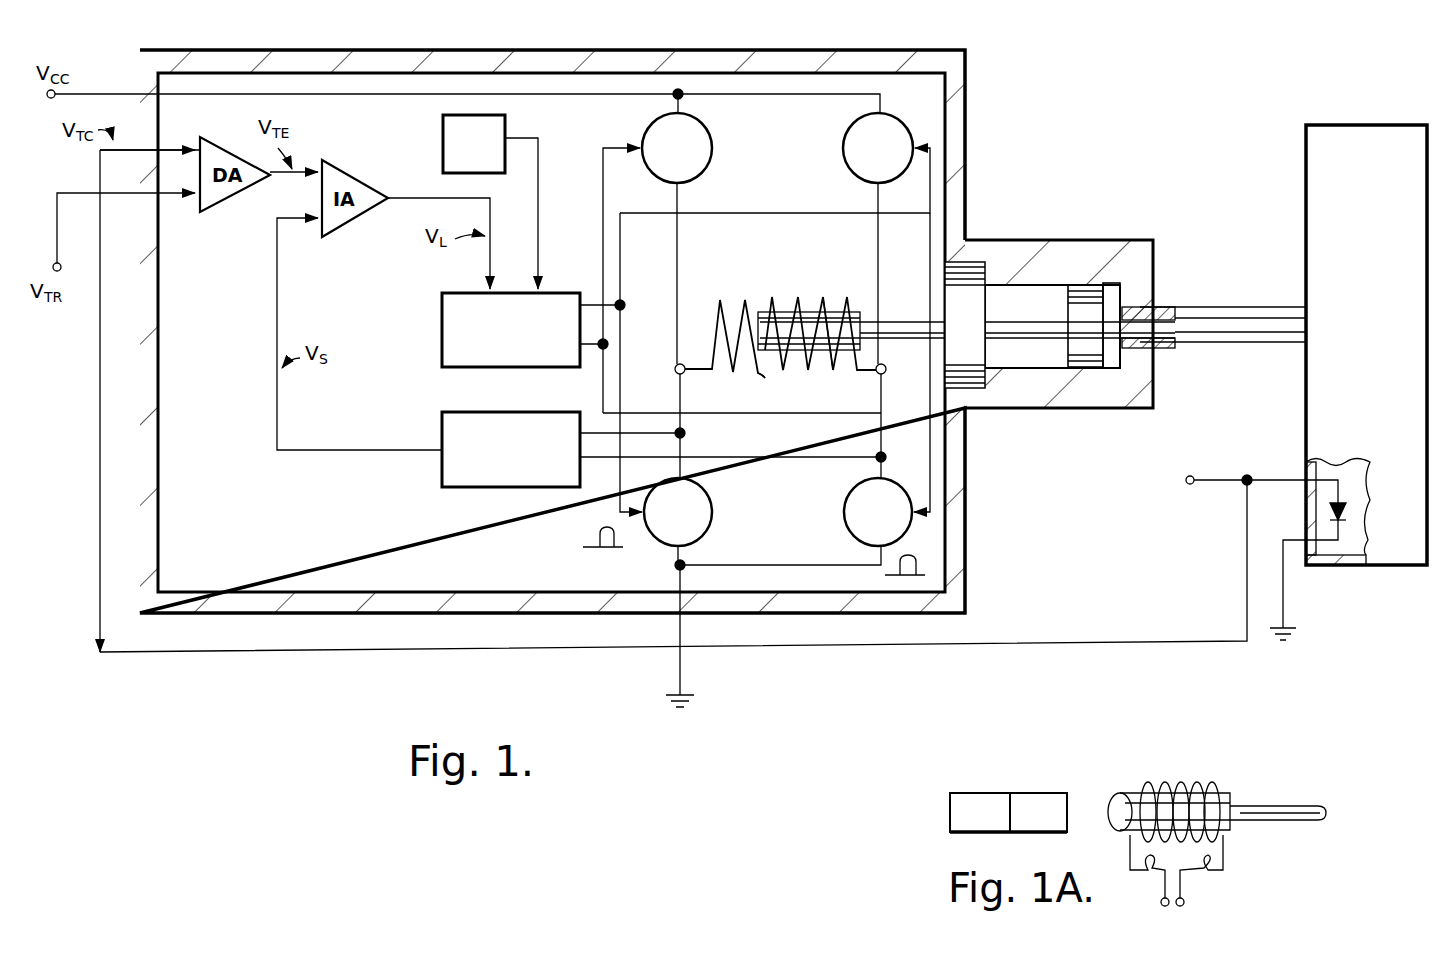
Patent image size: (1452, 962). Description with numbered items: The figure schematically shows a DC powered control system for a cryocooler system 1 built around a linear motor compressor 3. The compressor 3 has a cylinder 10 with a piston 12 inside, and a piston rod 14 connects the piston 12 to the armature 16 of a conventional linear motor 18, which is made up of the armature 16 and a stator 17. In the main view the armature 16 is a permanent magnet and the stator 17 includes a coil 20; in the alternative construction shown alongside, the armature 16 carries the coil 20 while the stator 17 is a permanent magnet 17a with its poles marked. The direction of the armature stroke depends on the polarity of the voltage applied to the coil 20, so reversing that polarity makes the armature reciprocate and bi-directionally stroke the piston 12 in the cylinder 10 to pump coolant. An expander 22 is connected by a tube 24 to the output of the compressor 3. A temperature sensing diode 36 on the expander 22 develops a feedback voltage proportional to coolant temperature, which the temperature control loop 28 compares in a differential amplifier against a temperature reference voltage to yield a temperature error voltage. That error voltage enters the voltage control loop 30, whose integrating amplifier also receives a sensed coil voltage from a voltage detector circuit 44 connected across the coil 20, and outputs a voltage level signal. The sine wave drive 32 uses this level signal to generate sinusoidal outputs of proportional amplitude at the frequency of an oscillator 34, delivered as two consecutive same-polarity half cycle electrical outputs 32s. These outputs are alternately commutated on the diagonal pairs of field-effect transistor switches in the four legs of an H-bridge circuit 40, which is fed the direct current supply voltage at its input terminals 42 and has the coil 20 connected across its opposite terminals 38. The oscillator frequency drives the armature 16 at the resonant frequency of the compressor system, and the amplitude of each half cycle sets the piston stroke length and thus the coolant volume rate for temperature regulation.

In FIG. 1, the cryocooler system 1 is at (1190, 428).
In FIG. 1, the linear motor compressor 3 is at (967, 77).
In FIG. 1, the cylinder 10 is at (1018, 290).
In FIG. 1, the piston 12 is at (1092, 300).
In FIG. 1, the piston rod 14 is at (903, 322).
In FIG. 1A, the piston rod 14 is at (1286, 805).
In FIG. 1, the armature 16 is at (795, 330).
In FIG. 1A, the armature 16 is at (1160, 780).
In FIG. 1, the stator 17 is at (716, 310).
In FIG. 1A, the stator 17 is at (963, 782).
In FIG. 1A, the permanent magnet 17a is at (1025, 793).
In FIG. 1, the linear motor 18 is at (828, 296).
In FIG. 1, the coil 20 is at (765, 378).
In FIG. 1A, the coil 20 is at (1192, 792).
In FIG. 1, the expander 22 is at (1306, 380).
In FIG. 1, the tube 24 is at (1237, 317).
In FIG. 1, the temperature control loop 28 is at (1100, 641).
In FIG. 1, the voltage control loop 30 is at (282, 305).
In FIG. 1, the sine wave drive 32 is at (442, 320).
In FIG. 1, the half cycle electrical outputs 32s is at (586, 536).
In FIG. 1, the oscillator 34 is at (443, 118).
In FIG. 1, the temperature sensing diode 36 is at (1322, 517).
In FIG. 1, the terminals 38 is at (675, 370).
In FIG. 1A, the terminals 38 is at (1190, 915).
In FIG. 1, the bridge circuit 40 is at (671, 501).
In FIG. 1, the input terminals 42 is at (682, 94).
In FIG. 1, the voltage detector circuit 44 is at (462, 487).